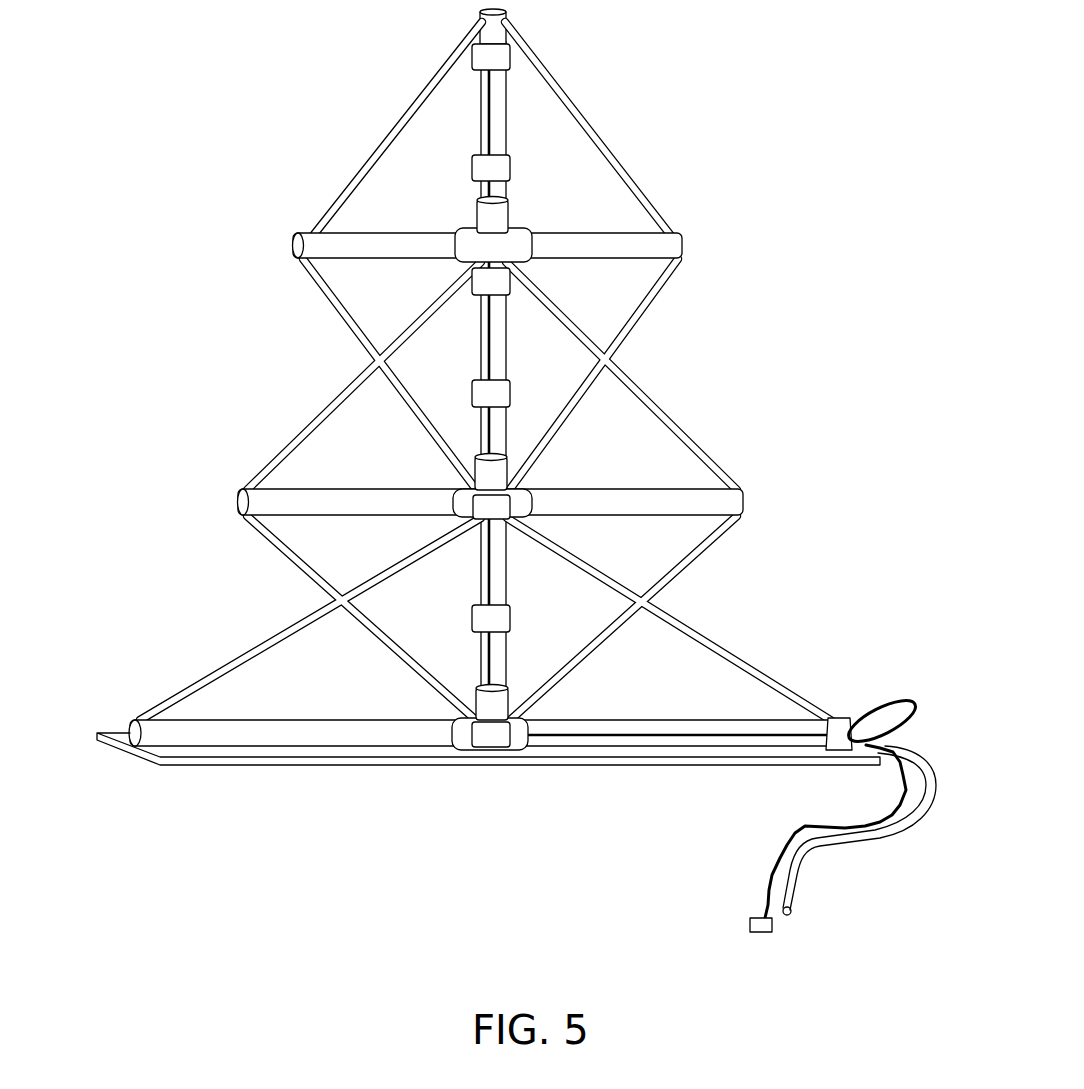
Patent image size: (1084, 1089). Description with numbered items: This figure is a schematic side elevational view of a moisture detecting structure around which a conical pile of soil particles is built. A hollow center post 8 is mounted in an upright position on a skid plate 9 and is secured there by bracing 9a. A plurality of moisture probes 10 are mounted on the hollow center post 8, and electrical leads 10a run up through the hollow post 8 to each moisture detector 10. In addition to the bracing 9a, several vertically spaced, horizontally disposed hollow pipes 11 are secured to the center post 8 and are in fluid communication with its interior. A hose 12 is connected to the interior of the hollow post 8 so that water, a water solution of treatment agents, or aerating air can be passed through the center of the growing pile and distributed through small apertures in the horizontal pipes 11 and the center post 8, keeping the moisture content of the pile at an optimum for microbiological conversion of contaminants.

The hollow center post 8 is at (506, 578).
The skid plate 9 is at (488, 808).
The bracing 9a is at (423, 82).
The moisture probes 10 is at (514, 165).
The electrical leads 10a is at (766, 875).
The horizontally disposed hollow pipes 11 is at (247, 483).
The hose 12 is at (860, 818).